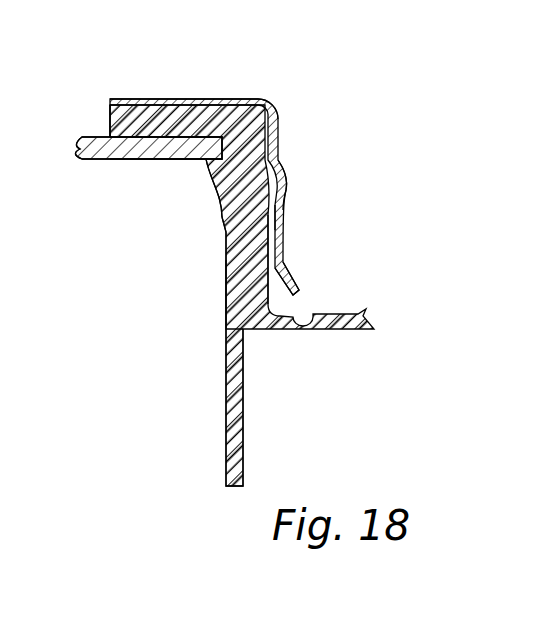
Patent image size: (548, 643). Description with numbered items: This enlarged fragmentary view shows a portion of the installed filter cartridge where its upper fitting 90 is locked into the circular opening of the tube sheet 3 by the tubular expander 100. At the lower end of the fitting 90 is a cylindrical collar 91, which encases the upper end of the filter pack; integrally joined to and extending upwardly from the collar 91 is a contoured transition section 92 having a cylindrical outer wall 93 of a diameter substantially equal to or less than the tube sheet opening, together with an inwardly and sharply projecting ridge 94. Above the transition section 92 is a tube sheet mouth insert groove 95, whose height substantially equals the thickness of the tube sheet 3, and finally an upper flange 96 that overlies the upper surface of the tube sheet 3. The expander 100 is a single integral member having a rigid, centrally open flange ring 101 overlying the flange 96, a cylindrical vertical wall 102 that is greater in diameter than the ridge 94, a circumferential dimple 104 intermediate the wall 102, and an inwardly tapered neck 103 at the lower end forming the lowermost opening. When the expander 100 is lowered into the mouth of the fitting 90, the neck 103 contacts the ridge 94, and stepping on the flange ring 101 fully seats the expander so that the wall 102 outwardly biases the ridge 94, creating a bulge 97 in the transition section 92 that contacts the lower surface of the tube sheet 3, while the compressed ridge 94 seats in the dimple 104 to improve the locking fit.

The tube sheet 3 is at (127, 179).
The fitting 90 is at (214, 266).
The cylindrical collar 91 is at (233, 412).
The transition section 92 is at (223, 276).
The cylindrical outer wall 93 is at (223, 255).
The projecting ridge 94 is at (272, 198).
The tube sheet mouth insert groove 95 is at (163, 166).
The upper flange 96 is at (110, 123).
The bulge 97 is at (212, 182).
The tubular expander 100 is at (236, 262).
The flange ring 101 is at (175, 99).
The cylindrical vertical wall 102 is at (254, 171).
The inwardly tapered neck 103 is at (296, 283).
The circumferential dimple 104 is at (288, 181).